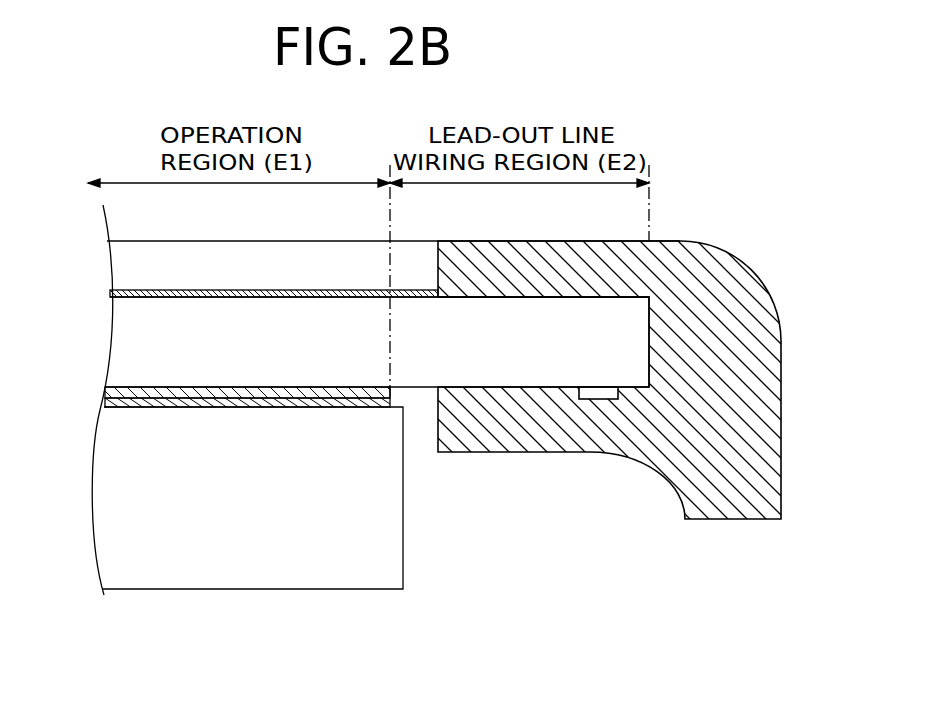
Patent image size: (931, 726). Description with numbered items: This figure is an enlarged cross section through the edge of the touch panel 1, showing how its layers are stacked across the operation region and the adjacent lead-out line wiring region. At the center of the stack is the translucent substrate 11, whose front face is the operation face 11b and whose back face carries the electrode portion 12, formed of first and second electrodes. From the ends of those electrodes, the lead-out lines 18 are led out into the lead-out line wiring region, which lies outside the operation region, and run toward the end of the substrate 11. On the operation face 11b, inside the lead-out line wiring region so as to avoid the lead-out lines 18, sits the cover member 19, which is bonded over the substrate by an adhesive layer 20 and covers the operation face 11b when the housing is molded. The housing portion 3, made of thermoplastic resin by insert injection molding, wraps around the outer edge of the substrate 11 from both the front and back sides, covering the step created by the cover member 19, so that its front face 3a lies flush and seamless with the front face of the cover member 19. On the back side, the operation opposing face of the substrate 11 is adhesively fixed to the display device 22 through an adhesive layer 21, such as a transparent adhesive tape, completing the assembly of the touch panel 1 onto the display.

The touch panel 1 is at (735, 162).
The housing portion 3 is at (763, 290).
The front face 3a is at (520, 241).
The substrate 11 is at (135, 338).
The front face (operation face) 11b is at (477, 293).
The electrode portion 12 is at (108, 397).
The lead-out line 18 is at (600, 399).
The cover member 19 is at (125, 265).
The adhesive layer 20 is at (271, 290).
The adhesive layer 21 is at (235, 407).
The display device 22 is at (352, 589).